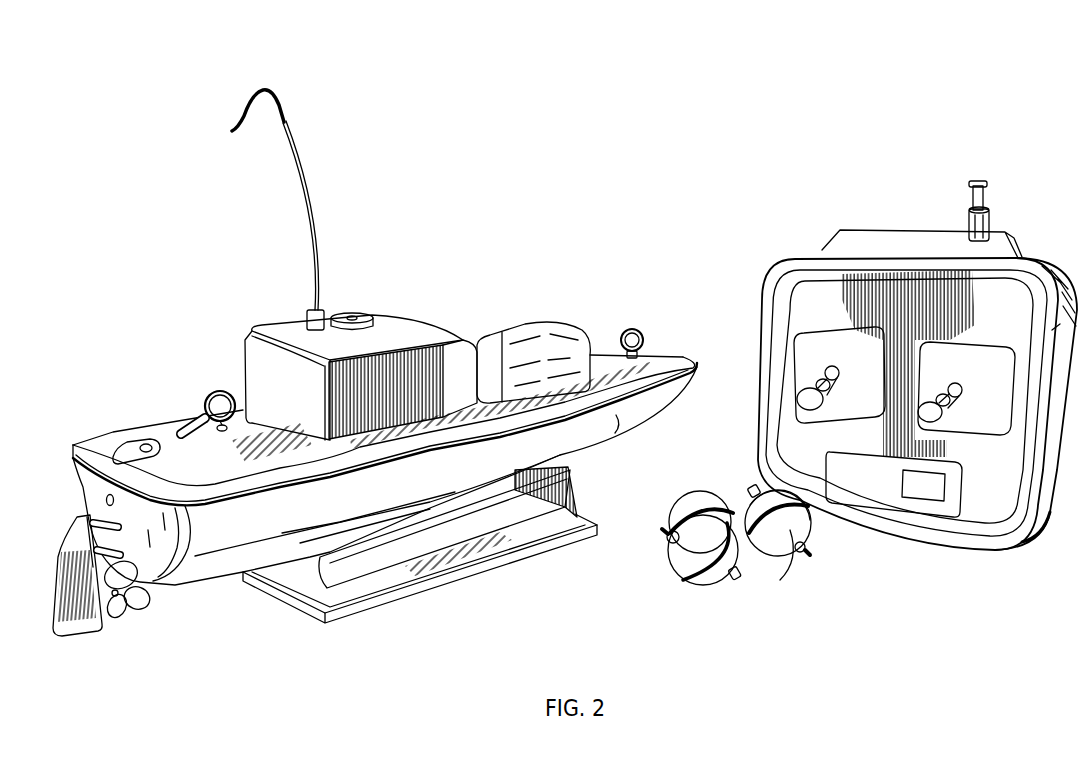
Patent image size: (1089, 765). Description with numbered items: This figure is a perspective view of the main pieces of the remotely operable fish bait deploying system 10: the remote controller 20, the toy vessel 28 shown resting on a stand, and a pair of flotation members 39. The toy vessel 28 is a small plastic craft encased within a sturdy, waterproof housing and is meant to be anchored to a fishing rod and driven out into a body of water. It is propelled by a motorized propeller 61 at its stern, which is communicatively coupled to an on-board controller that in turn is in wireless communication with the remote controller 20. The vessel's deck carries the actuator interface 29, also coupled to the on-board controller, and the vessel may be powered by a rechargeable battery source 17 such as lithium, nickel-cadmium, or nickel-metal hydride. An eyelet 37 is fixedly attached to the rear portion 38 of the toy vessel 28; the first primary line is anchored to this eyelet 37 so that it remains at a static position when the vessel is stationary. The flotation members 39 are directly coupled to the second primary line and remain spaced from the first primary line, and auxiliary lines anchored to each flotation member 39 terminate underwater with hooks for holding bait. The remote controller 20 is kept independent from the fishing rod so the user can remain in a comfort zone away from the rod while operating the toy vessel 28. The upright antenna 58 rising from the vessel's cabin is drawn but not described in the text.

The fish bait deploying system 10 is at (531, 66).
The rechargeable battery source 17 is at (537, 336).
The remote controller 20 is at (1032, 262).
The toy vessel 28 is at (160, 425).
The actuator interface 29 is at (392, 333).
The eyelet 37 is at (213, 390).
The rear portion 38 is at (113, 437).
The flotation members 39 is at (693, 550).
The antenna 58 is at (236, 130).
The motorized propeller 61 is at (128, 633).